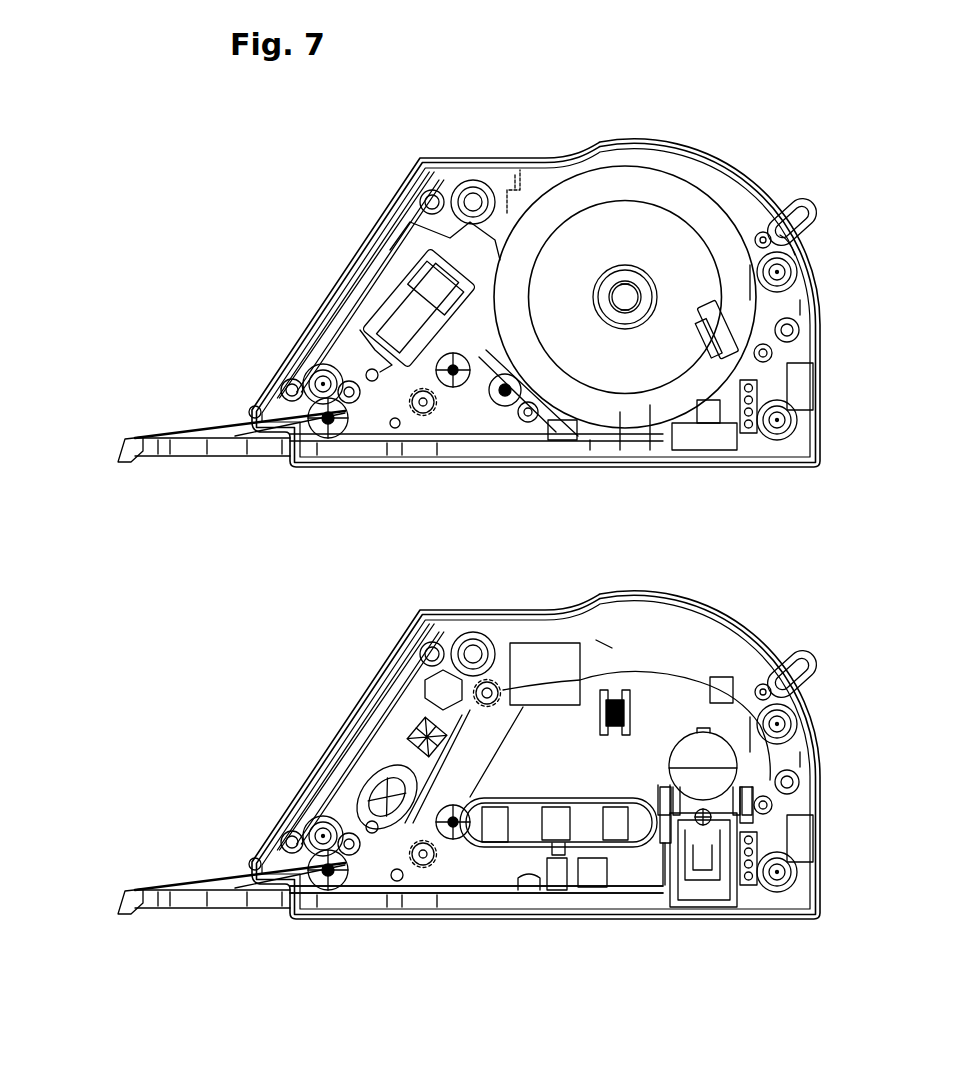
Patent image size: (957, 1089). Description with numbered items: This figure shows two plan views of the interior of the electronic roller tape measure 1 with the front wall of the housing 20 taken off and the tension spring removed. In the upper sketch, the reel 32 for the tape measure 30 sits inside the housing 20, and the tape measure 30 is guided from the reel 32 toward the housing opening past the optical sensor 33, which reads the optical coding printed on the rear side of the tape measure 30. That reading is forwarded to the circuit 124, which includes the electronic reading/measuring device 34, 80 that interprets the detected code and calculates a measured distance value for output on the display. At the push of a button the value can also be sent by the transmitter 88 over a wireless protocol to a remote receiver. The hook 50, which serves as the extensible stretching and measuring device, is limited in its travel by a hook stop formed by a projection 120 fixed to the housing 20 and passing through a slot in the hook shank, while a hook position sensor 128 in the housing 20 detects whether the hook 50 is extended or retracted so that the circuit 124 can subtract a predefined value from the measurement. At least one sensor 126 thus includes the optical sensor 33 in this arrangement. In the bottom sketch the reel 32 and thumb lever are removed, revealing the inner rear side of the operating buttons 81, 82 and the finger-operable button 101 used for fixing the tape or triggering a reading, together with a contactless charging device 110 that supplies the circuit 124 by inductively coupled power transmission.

The roller tape measure 1 is at (812, 156).
The housing 20 is at (720, 158).
The tape measure 30 is at (197, 427).
The reel 32 is at (578, 188).
The optical sensor 33 is at (377, 892).
The electronic reading/measuring device 34 is at (530, 663).
The hook 50 is at (123, 438).
The electronic reading/measuring device 80 is at (476, 889).
The operating button 81 is at (330, 740).
The operating button 82 is at (377, 670).
The transmitter 88 is at (733, 675).
The finger-operable button 101 is at (698, 757).
The contactless charging device 110 is at (703, 905).
The projection 120 is at (520, 893).
The circuit 124 is at (603, 638).
The sensor 126 is at (410, 880).
The hook position sensor 128 is at (557, 807).